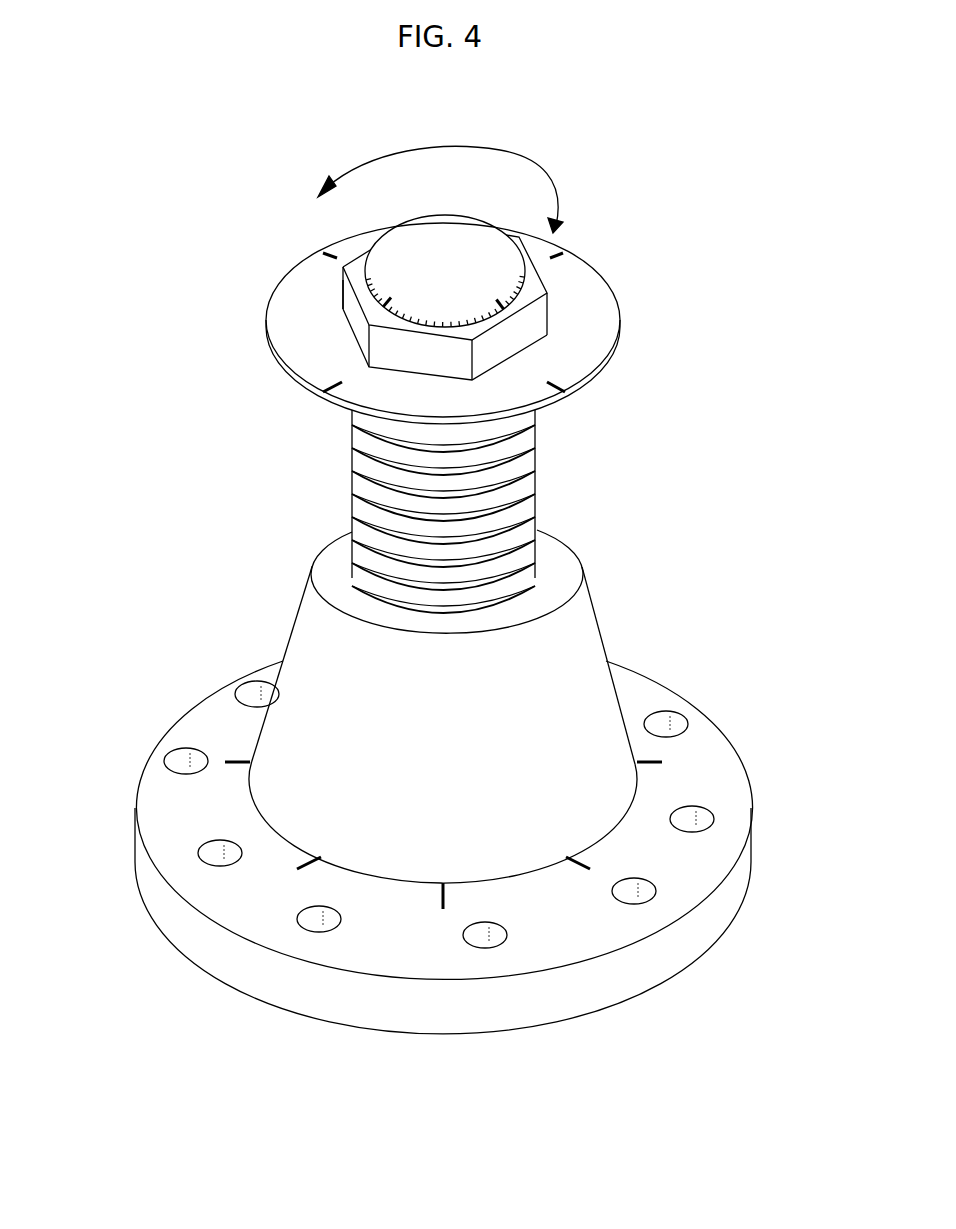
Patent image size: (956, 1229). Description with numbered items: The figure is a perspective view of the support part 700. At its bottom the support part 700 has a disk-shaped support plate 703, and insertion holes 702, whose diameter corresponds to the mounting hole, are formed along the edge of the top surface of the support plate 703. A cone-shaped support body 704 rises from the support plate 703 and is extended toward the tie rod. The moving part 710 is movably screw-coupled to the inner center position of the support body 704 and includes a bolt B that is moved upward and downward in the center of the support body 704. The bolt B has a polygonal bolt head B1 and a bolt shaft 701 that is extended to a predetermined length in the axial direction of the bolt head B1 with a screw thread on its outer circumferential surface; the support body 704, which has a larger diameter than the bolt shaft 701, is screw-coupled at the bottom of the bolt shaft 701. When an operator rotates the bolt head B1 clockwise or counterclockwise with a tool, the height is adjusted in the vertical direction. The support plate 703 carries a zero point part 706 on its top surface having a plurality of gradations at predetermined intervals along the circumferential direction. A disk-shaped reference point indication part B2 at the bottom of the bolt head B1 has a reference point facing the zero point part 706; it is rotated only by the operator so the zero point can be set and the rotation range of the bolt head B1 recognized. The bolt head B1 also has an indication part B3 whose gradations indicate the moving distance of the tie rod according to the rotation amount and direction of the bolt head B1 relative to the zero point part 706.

The support part 700 is at (706, 207).
The bolt shaft 701 is at (538, 467).
The insertion holes 702 is at (213, 842).
The support plate 703 is at (698, 702).
The support body 704 is at (312, 656).
The zero point part 706 is at (237, 762).
The moving part 710 is at (566, 289).
The bolt B is at (716, 423).
The bolt head B1 is at (343, 310).
The reference point indication part B2 is at (327, 388).
The indication part B3 is at (493, 303).